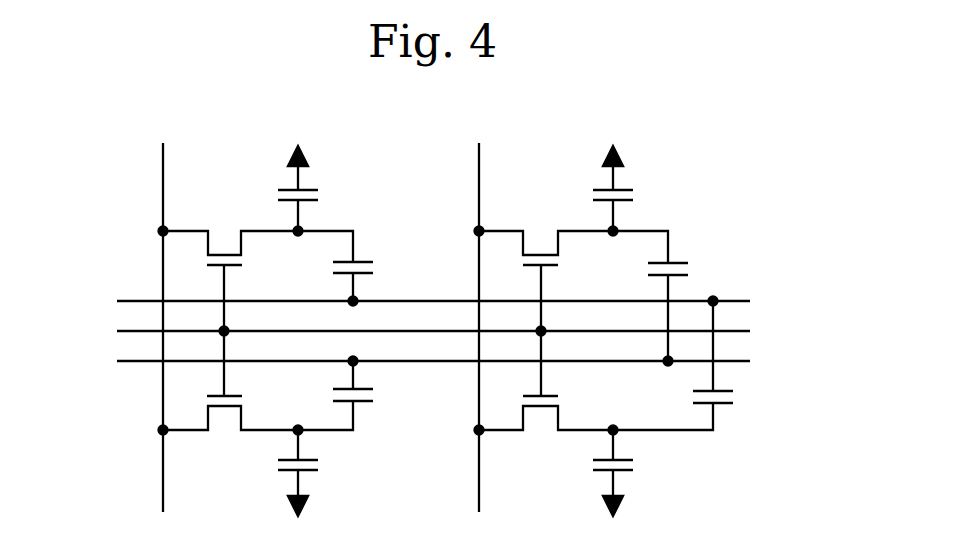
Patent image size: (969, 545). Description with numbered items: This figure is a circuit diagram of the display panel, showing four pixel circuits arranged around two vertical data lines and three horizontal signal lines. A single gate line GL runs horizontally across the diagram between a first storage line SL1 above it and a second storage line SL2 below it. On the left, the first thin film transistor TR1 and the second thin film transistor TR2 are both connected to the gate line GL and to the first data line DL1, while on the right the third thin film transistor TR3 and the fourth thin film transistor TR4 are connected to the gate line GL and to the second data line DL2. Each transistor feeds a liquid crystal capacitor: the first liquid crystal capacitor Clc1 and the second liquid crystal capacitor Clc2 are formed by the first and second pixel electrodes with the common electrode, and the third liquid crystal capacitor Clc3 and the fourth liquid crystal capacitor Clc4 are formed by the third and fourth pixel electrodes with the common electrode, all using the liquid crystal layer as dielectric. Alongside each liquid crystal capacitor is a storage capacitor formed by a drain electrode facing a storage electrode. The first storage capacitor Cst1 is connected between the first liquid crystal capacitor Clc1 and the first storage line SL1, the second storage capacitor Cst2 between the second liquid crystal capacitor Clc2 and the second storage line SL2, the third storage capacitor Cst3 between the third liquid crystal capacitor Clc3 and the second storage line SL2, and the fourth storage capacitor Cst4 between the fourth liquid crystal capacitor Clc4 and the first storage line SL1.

The first data line DL1 is at (161, 316).
The second data line DL2 is at (478, 316).
The first storage line SL1 is at (416, 300).
The gate line GL is at (421, 330).
The second storage line SL2 is at (416, 360).
The first thin film transistor TR1 is at (223, 238).
The second thin film transistor TR2 is at (224, 422).
The third thin film transistor TR3 is at (539, 238).
The fourth thin film transistor TR4 is at (540, 422).
The first liquid crystal capacitor Clc1 is at (320, 192).
The second liquid crystal capacitor Clc2 is at (320, 467).
The third liquid crystal capacitor Clc3 is at (635, 192).
The fourth liquid crystal capacitor Clc4 is at (635, 467).
The first storage capacitor Cst1 is at (375, 268).
The second storage capacitor Cst2 is at (375, 395).
The third storage capacitor Cst3 is at (690, 269).
The fourth storage capacitor Cst4 is at (735, 396).